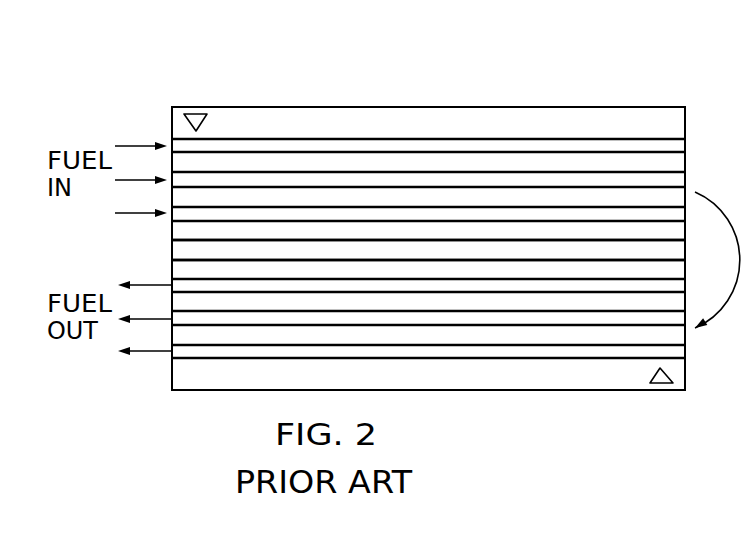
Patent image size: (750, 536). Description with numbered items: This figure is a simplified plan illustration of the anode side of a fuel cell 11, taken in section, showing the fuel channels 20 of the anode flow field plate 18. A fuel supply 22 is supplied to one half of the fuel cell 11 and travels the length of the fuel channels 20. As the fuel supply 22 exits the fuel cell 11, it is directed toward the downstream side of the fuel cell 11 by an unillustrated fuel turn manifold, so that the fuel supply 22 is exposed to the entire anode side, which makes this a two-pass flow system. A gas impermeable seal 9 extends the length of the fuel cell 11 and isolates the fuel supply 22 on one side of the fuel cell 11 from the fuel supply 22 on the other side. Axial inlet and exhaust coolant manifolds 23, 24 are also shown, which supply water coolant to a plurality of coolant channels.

The fuel cell 11 is at (132, 80).
The anode flow field plate 18 is at (598, 124).
The fuel channels 20 is at (394, 147).
The gas impermeable seal 9 is at (663, 249).
The fuel supply 22 is at (142, 146).
The inlet coolant manifold 23 is at (195, 112).
The exhaust coolant manifold 24 is at (662, 384).